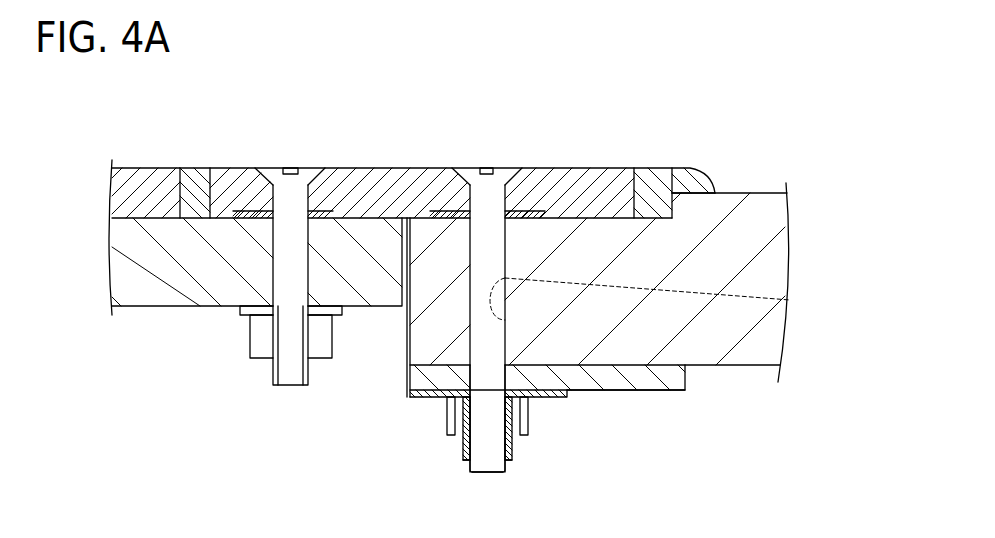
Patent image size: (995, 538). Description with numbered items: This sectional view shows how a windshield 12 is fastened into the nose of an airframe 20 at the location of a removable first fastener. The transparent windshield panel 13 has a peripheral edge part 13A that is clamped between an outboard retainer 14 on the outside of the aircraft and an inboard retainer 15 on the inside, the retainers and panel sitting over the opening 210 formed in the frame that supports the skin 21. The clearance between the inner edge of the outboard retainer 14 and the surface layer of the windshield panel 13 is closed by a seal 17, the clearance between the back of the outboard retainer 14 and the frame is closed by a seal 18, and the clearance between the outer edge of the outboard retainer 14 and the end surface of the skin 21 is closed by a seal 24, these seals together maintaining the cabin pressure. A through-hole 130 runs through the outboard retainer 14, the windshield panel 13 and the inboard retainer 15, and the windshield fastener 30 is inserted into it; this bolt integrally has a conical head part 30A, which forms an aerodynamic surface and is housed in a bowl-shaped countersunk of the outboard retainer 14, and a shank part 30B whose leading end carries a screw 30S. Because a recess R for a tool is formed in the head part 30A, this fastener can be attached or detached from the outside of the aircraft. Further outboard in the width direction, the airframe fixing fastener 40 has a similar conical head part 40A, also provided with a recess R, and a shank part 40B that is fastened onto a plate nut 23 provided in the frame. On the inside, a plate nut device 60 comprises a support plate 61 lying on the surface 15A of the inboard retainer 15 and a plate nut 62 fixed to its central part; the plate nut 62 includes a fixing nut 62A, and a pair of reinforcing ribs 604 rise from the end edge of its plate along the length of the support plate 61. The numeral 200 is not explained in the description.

The windshield 12 is at (762, 178).
The windshield panel 13 is at (777, 322).
The peripheral edge part 13A is at (412, 352).
The outboard retainer 14 is at (606, 166).
The inboard retainer 15 is at (686, 384).
The surface of the inboard retainer 15A is at (662, 392).
The seal 17 is at (655, 166).
The seal 18 is at (346, 166).
The airframe 20 is at (160, 160).
The skin 21 is at (122, 166).
The plate nut 23 is at (253, 352).
The seal 24 is at (193, 166).
The windshield fastener 30 is at (518, 166).
The head part 30A is at (463, 166).
The shank part 30B is at (472, 372).
The screw 30S is at (458, 468).
The airframe fixing fastener 40 is at (310, 166).
The head part 40A is at (262, 166).
The shank part 40B is at (243, 309).
The plate nut device 60 is at (528, 437).
The support plate 61 is at (553, 396).
The plate nut 62 is at (530, 432).
The fixing nut 62A is at (510, 462).
The through-hole 130 is at (790, 300).
The bore of first pin 200 is at (292, 277).
The opening 210 is at (410, 230).
The reinforcing ribs 604 is at (452, 436).
The recess R is at (288, 166).